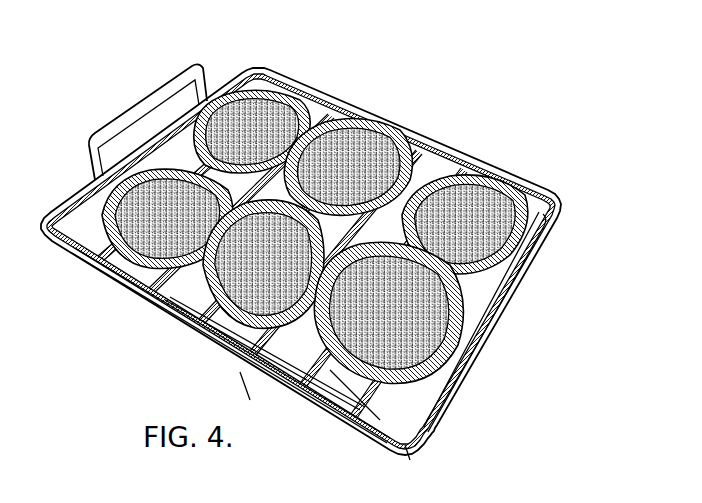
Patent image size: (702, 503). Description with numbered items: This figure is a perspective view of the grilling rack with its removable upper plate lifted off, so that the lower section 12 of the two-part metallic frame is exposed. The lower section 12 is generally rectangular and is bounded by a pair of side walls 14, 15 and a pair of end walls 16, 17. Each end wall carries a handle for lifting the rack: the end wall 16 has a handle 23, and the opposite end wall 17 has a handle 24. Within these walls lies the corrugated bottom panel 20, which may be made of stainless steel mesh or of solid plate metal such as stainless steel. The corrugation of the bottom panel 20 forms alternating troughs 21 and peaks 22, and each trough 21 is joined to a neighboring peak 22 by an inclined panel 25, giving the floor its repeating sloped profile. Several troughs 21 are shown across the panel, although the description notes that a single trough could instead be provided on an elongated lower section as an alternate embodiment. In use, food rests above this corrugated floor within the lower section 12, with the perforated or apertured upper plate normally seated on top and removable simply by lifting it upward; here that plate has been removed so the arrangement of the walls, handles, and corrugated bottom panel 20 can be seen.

The lower section 12 is at (455, 147).
The side wall 14 is at (150, 317).
The side wall 15 is at (277, 93).
The end wall 16 is at (440, 417).
The end wall 17 is at (70, 197).
The corrugated bottom panel 20 is at (337, 428).
The trough 21 is at (110, 283).
The peak 22 is at (188, 340).
The handle 23 is at (541, 240).
The handle 24 is at (148, 102).
The inclined panel 25 is at (247, 375).